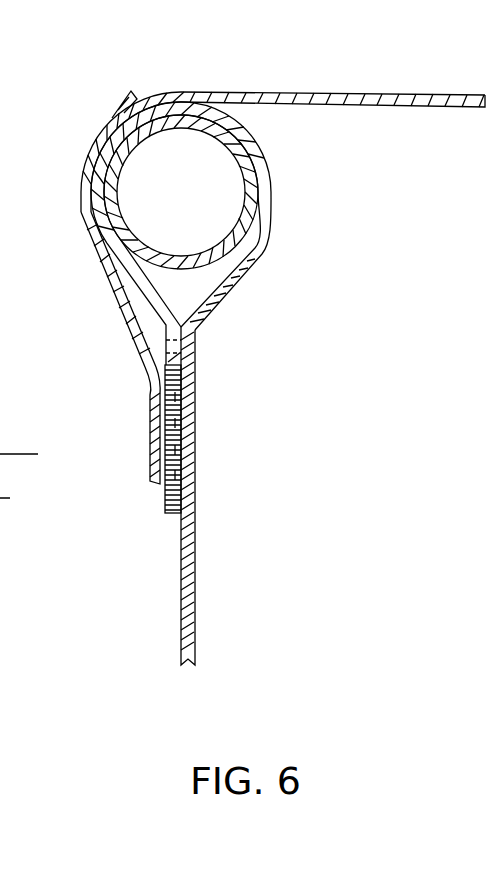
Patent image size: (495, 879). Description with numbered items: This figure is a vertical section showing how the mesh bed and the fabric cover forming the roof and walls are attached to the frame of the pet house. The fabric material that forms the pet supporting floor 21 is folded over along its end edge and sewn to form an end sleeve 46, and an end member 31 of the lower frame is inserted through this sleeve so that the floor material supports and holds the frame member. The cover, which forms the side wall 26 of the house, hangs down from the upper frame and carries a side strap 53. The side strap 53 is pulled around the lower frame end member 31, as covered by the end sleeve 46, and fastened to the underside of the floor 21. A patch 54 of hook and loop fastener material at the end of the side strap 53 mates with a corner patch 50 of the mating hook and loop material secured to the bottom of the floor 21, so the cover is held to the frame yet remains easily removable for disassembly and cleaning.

The pet supporting floor 21 is at (195, 572).
The side wall 26 is at (328, 98).
The end member 31 is at (240, 230).
The end sleeve 46 is at (273, 185).
The corner patch 50 is at (163, 502).
The side strap 53 is at (130, 333).
The patch 54 is at (153, 418).